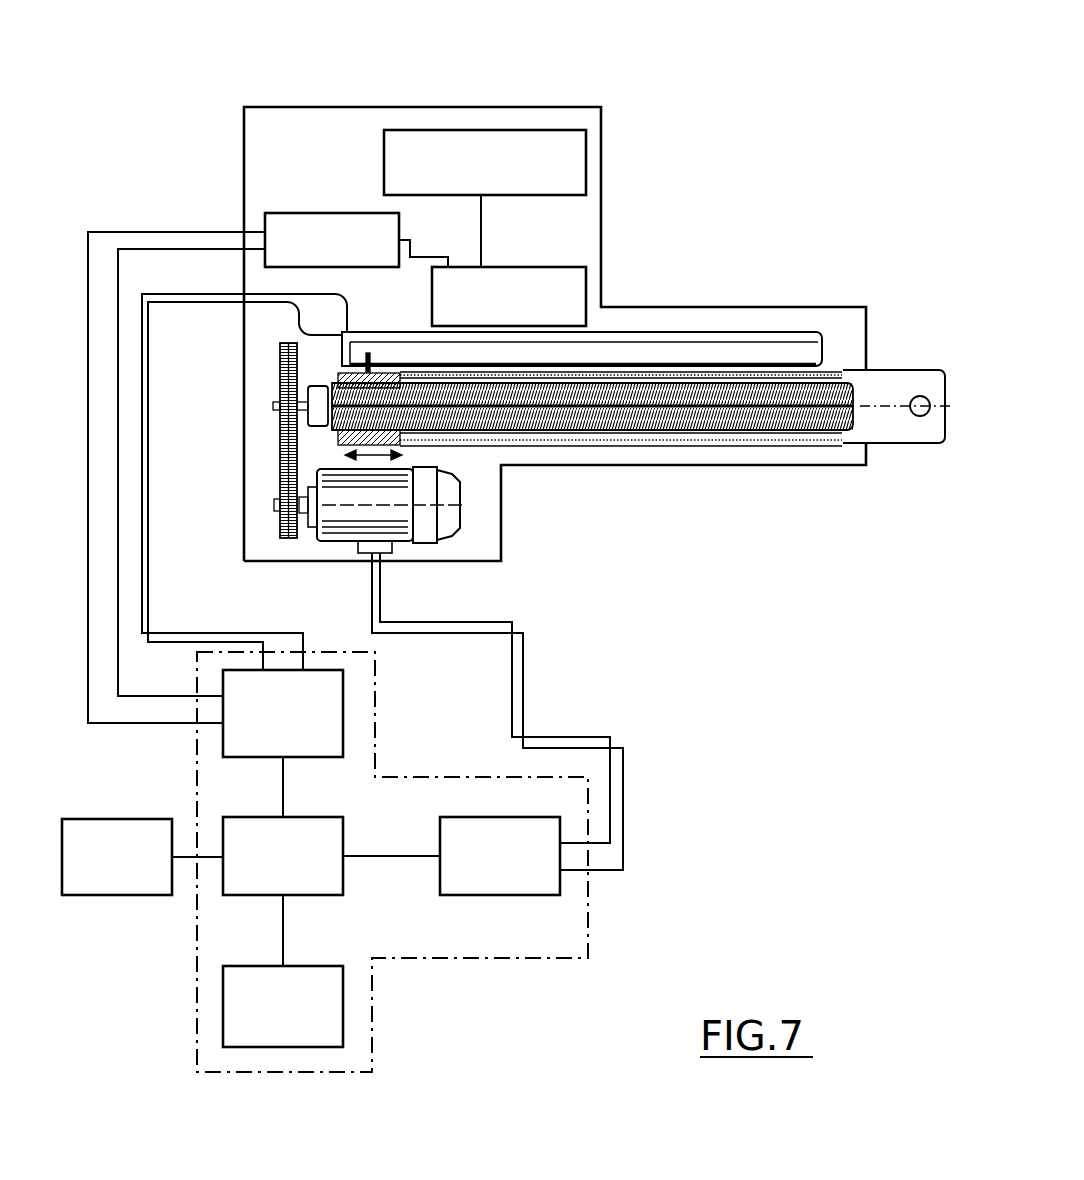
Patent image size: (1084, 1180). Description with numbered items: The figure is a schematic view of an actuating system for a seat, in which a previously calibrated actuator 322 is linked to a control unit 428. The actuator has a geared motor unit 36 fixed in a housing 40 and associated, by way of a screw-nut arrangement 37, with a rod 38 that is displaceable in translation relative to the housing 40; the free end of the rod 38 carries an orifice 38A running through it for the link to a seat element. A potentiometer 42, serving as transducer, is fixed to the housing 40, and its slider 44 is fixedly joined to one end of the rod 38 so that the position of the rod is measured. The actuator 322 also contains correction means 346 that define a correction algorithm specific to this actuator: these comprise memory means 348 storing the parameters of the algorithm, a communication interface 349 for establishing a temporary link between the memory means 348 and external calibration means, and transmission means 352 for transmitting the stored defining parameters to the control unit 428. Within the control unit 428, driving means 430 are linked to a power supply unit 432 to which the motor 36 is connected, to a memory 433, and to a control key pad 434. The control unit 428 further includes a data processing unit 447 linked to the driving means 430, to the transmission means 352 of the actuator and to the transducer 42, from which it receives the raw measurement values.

The correction means 346 is at (578, 106).
The actuator 322 is at (624, 270).
The communication interface 349 is at (384, 171).
The transmission means 352 is at (310, 213).
The memory means 348 is at (560, 268).
The potentiometer 42 is at (814, 350).
The orifice 38A is at (906, 386).
The slider 44 is at (350, 358).
The screw-nut arrangement 37 is at (326, 440).
The rod 38 is at (593, 443).
The geared motor unit 36 is at (400, 527).
The housing 40 is at (460, 545).
The data processing unit 447 is at (318, 746).
The power supply unit 432 is at (440, 840).
The driving means 430 is at (306, 887).
The control key pad 434 is at (126, 894).
The memory 433 is at (290, 1035).
The control unit 428 is at (423, 988).